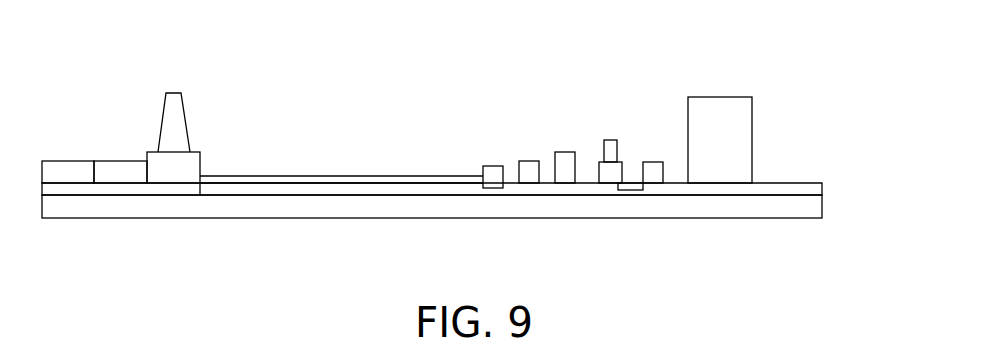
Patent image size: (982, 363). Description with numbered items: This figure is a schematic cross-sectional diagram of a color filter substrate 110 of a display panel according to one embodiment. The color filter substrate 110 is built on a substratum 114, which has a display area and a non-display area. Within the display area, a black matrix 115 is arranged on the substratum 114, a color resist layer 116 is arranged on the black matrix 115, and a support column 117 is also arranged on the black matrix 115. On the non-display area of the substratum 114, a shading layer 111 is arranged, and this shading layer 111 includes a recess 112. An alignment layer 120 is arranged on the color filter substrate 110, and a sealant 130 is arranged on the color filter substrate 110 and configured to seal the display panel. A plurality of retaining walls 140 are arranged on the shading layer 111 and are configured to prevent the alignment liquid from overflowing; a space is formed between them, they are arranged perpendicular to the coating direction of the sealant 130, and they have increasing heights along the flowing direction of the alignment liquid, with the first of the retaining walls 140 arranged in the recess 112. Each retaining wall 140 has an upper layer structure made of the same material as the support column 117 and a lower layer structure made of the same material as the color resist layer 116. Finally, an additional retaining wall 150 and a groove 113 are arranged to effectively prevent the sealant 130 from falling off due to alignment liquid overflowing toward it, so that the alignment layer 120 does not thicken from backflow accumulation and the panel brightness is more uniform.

The color filter substrate 110 is at (827, 88).
The shading layer 111 is at (405, 190).
The recess 112 is at (498, 190).
The groove 113 is at (637, 193).
The substratum 114 is at (433, 203).
The black matrix 115 is at (140, 190).
The color resist layer 116 is at (113, 153).
The support column 117 is at (178, 115).
The alignment layer 120 is at (268, 180).
The sealant 130 is at (715, 107).
The retaining walls 140 is at (622, 140).
The additional retaining wall 150 is at (657, 175).